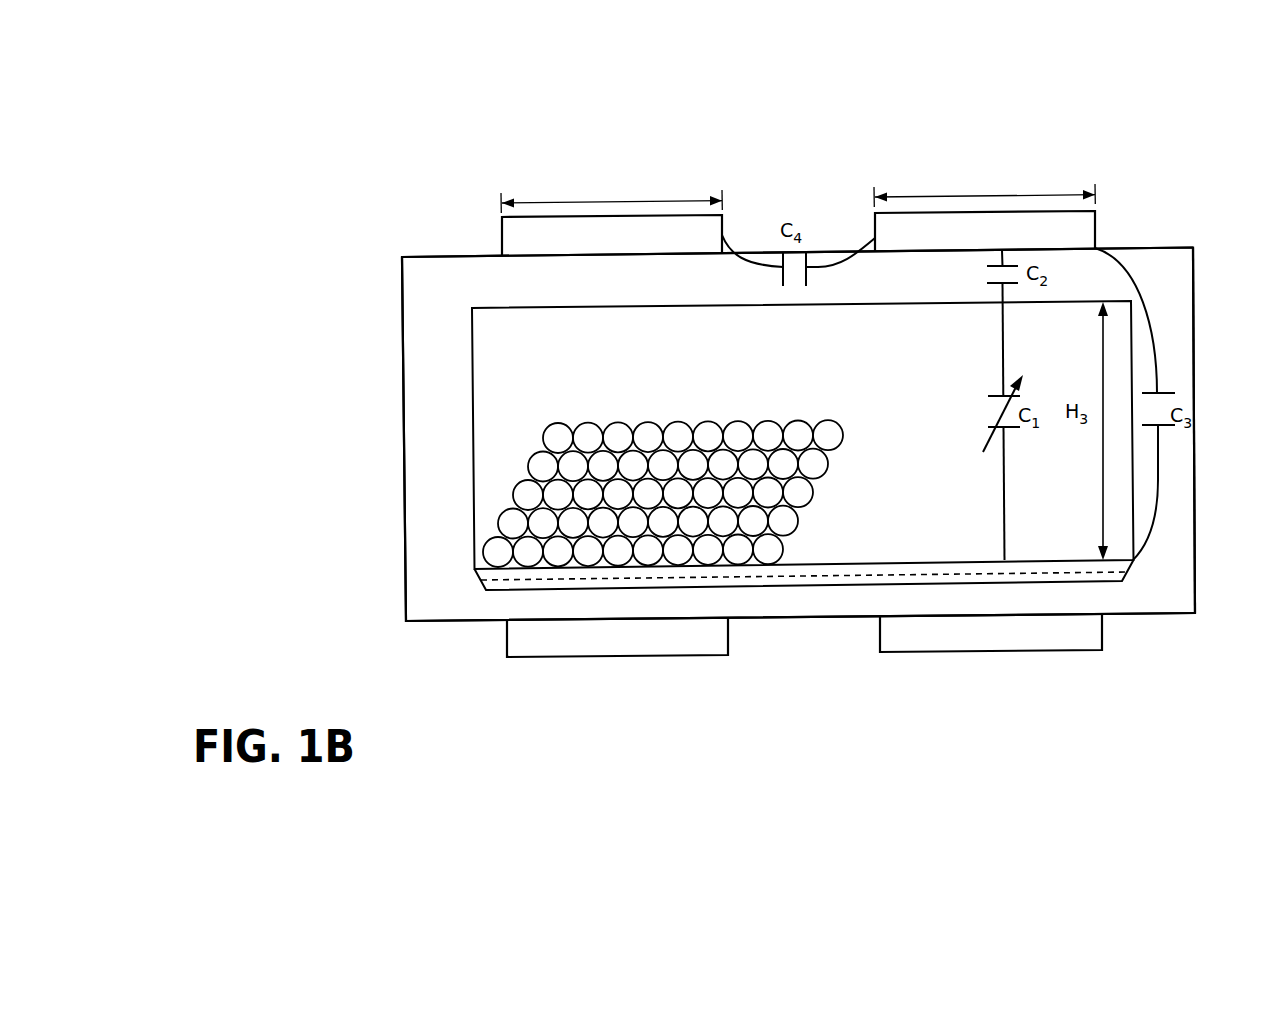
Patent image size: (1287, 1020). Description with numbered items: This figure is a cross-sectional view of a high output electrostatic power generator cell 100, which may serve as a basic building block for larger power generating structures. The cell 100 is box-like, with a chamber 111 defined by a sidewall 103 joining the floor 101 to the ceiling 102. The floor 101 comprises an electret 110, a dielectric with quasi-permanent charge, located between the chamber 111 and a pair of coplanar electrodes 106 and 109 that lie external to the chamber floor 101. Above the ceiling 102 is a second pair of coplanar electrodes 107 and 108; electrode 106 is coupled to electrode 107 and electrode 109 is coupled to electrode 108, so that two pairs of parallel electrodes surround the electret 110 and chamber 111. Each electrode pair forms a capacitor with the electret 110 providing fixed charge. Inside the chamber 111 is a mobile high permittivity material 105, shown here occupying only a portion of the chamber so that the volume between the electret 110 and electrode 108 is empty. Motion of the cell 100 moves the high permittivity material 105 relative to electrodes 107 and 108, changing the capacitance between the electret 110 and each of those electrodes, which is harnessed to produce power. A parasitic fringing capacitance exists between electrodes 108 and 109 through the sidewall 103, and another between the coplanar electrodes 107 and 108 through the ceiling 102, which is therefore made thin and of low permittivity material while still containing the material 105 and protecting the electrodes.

The high output electrostatic power generator cell 100 is at (270, 140).
The floor 101 is at (547, 600).
The ceiling 102 is at (505, 290).
The sidewall 103 is at (1195, 448).
The high permittivity material 105 is at (800, 507).
The electrode 106 is at (602, 642).
The electrode 107 is at (625, 232).
The electrode 108 is at (1023, 227).
The electrode 109 is at (1002, 635).
The electret 110 is at (783, 583).
The chamber 111 is at (510, 373).